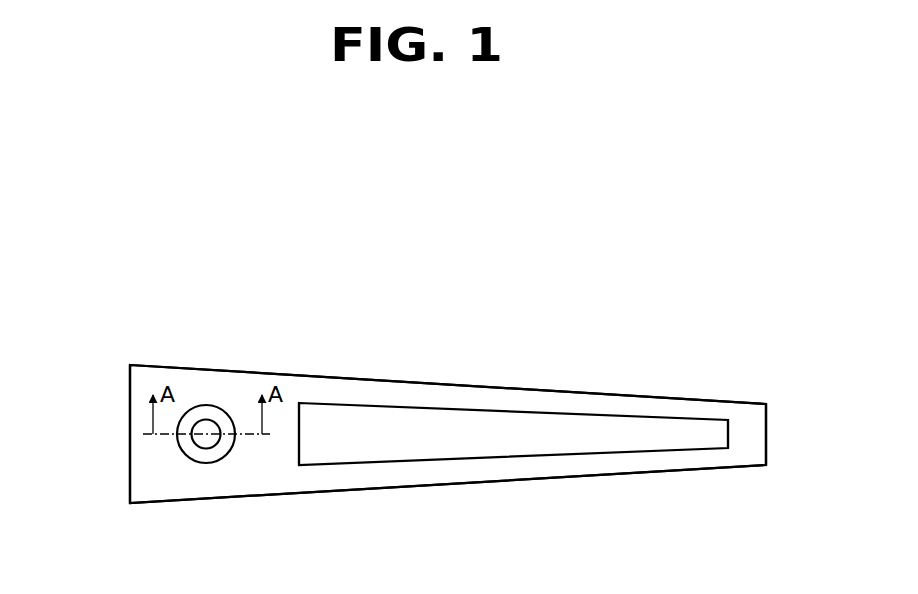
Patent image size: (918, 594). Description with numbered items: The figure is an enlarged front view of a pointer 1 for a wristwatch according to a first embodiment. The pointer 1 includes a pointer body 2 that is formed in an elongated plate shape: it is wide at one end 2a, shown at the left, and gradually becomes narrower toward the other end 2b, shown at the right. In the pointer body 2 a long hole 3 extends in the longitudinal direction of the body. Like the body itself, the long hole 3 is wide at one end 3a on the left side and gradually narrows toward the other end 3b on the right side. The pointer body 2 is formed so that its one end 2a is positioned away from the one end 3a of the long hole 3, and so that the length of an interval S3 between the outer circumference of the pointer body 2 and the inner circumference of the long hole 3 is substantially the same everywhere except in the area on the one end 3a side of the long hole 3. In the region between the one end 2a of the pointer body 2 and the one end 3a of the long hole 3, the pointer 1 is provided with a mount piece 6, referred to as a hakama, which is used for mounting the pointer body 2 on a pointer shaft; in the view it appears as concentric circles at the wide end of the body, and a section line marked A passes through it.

The pointer 1 is at (137, 323).
The pointer body 2 is at (355, 388).
The one end of pointer body 2a is at (130, 450).
The other end of pointer body 2b is at (766, 428).
The long hole 3 is at (486, 437).
The one end of long hole 3a is at (300, 441).
The other end of long hole 3b is at (727, 432).
The mount piece 6 is at (205, 463).
The interval S3 is at (640, 440).